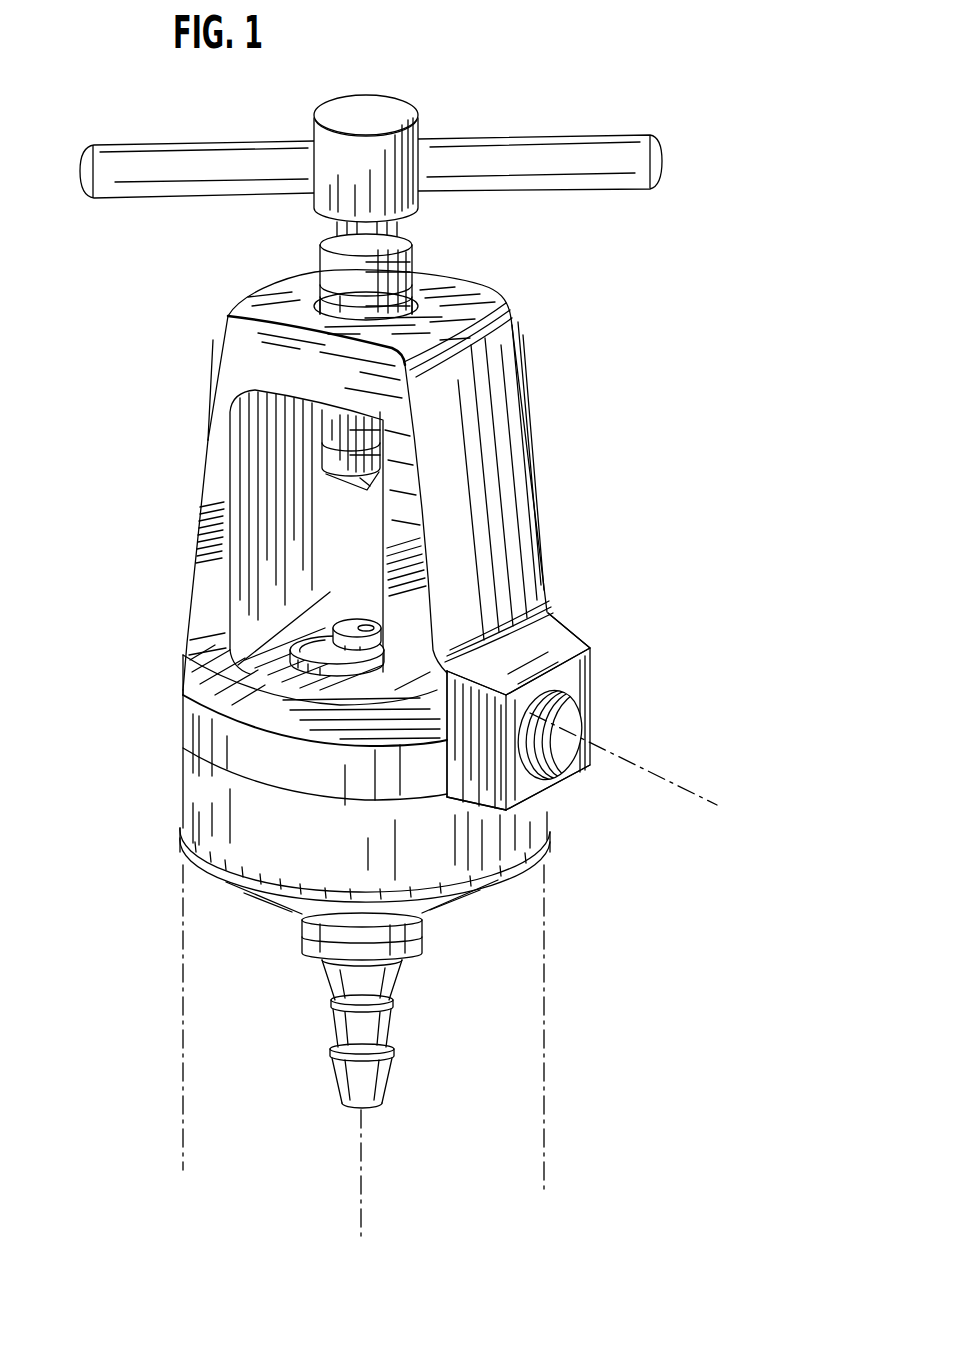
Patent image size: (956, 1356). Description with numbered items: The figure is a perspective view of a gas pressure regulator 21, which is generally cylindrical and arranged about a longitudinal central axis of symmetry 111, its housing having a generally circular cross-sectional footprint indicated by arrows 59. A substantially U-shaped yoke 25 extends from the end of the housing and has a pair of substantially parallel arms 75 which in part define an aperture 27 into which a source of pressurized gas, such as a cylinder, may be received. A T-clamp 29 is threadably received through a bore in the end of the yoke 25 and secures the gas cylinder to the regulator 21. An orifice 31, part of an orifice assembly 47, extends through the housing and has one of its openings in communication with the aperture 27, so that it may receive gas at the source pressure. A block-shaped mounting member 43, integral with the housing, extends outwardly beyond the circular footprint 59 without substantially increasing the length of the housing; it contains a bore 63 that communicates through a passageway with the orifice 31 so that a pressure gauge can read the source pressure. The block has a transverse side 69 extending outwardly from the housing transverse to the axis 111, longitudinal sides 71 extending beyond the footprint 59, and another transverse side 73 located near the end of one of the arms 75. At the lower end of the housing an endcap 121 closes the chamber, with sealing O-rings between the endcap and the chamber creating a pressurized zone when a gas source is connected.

The gas pressure regulator 21 is at (547, 418).
The yoke 25 is at (189, 468).
The aperture 27 is at (350, 527).
The T-clamp 29 is at (431, 246).
The orifice 31 is at (190, 645).
The mounting member 43 is at (599, 640).
The orifice assembly 47 is at (371, 604).
The circular footprint 59 is at (172, 1128).
The bore 63 is at (598, 735).
The transverse side 69 is at (557, 787).
The longitudinal sides 71 is at (490, 793).
The transverse side 73 is at (553, 648).
The arms 75 is at (517, 548).
The central axis of symmetry 111 is at (374, 1207).
The endcap 121 is at (179, 800).